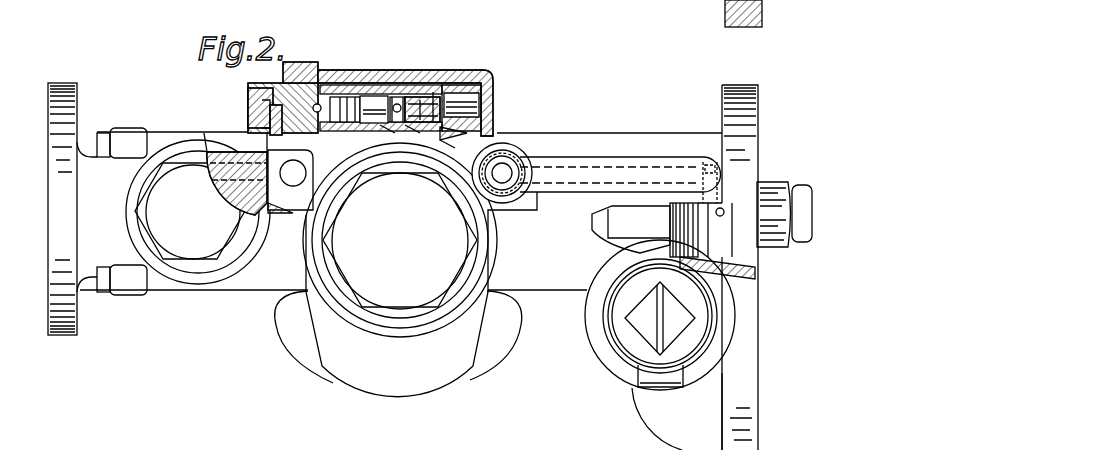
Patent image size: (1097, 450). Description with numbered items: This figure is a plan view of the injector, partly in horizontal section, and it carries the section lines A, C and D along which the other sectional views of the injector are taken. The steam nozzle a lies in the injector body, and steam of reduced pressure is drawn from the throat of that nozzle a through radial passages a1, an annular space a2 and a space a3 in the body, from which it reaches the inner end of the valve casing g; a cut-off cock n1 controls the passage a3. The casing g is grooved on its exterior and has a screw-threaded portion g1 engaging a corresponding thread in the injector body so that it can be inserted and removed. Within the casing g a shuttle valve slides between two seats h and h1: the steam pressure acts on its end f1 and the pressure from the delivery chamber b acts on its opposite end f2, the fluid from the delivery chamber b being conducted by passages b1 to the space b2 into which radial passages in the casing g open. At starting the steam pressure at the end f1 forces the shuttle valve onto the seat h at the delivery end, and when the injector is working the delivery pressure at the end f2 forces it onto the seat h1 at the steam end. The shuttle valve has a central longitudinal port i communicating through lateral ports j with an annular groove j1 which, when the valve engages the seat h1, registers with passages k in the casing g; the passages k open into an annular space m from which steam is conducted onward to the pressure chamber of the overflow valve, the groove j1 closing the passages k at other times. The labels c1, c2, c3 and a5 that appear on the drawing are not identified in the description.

The section line A A is at (66, 207).
The section line D D is at (338, 80).
The delivery chamber b is at (220, 182).
The passages b1 is at (236, 157).
The space b2 is at (313, 166).
The section line C C is at (399, 183).
The cylinder or casing g is at (248, 95).
The screw threaded portion g1 is at (303, 63).
The seat at the delivery end h is at (333, 97).
The seat at the steam end h1 is at (462, 83).
The steam end of shuttle valve f1 is at (481, 103).
The delivery end of shuttle valve f2 is at (370, 94).
The valve pin c1 is at (415, 109).
The stem nut c2 is at (274, 114).
The valve seat wedge c3 is at (453, 138).
The lateral ports j is at (421, 98).
The central longitudinal port or passage i is at (434, 90).
The annular groove j1 is at (387, 134).
The annular space m is at (412, 134).
The passages k is at (446, 145).
The cut off cock n1 is at (506, 172).
The space in the injector body a3 is at (640, 163).
The steam nozzle a is at (702, 219).
The radial passages a1 is at (723, 216).
The annular space a2 is at (757, 263).
The block a5 is at (721, 13).